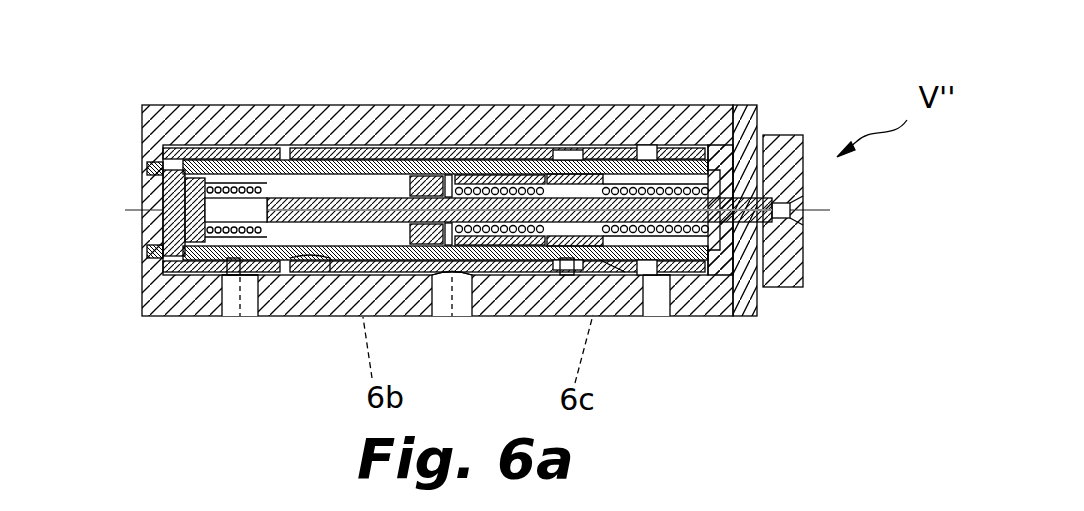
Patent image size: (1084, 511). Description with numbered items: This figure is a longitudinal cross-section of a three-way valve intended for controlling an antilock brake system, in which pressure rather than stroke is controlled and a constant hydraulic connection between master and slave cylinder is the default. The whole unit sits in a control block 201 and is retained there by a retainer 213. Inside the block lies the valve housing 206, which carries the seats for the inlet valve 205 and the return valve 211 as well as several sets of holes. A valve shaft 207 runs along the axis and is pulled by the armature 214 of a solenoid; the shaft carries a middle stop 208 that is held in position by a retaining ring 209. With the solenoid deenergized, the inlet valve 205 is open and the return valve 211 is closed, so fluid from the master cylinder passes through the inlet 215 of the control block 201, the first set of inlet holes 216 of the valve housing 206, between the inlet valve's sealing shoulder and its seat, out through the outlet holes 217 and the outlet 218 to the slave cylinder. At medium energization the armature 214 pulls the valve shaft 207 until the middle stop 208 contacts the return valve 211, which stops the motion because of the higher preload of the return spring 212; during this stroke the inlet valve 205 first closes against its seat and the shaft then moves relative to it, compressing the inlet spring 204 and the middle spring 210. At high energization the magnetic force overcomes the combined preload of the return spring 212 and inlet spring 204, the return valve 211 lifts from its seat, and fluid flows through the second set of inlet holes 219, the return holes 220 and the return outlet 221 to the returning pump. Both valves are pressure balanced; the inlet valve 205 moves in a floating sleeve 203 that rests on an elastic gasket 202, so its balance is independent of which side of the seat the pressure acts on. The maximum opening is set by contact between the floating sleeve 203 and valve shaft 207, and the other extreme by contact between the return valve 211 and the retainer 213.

The control block 201 is at (157, 105).
The elastic gasket 202 is at (147, 168).
The floating sleeve 203 is at (191, 105).
The inlet spring 204 is at (222, 105).
The inlet valve 205 is at (265, 105).
The valve housing 206 is at (337, 105).
The valve shaft 207 is at (395, 105).
The middle stop 208 is at (437, 105).
The retaining ring 209 is at (466, 105).
The middle spring 210 is at (545, 104).
The return valve 211 is at (588, 105).
The return spring 212 is at (660, 146).
The retainer 213 is at (747, 104).
The armature 214 is at (779, 134).
The inlet 215 is at (233, 316).
The first set of inlet holes 216 is at (261, 316).
The outlet holes 217 is at (331, 316).
The outlet 218 is at (452, 317).
The second set of inlet holes 219 is at (567, 313).
The return holes 220 is at (612, 313).
The return outlet 221 is at (653, 316).